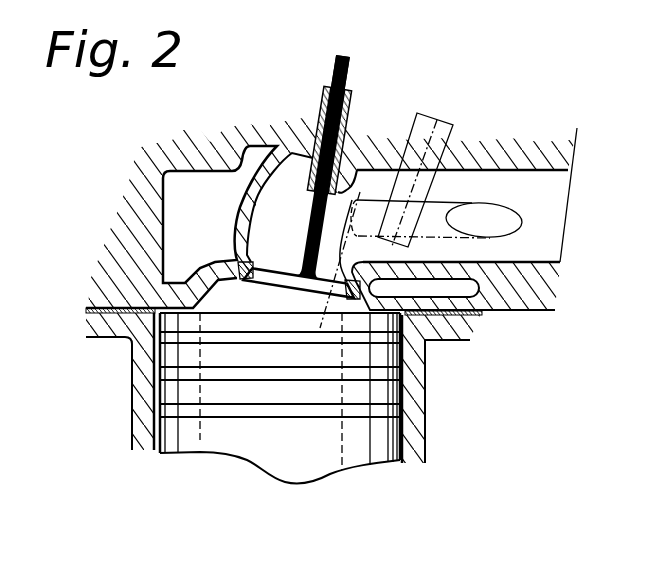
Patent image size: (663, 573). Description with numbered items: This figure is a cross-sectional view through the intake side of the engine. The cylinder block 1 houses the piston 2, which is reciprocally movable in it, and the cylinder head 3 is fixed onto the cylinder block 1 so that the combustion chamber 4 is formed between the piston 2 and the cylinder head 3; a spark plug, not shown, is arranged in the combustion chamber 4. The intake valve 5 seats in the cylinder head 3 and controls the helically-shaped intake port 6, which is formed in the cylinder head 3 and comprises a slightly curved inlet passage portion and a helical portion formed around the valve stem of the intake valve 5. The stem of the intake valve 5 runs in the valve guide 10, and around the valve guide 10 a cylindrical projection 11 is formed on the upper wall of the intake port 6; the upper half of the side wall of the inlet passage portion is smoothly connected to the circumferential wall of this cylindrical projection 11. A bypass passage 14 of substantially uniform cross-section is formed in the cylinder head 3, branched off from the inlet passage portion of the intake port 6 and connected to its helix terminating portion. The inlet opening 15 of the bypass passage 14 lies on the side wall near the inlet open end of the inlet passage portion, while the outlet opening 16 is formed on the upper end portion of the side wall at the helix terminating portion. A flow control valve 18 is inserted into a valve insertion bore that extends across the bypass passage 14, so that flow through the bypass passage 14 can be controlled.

The cylinder block 1 is at (137, 397).
The piston 2 is at (187, 432).
The cylinder head 3 is at (153, 230).
The combustion chamber 4 is at (234, 306).
The intake valve 5 is at (297, 263).
The helically-shaped intake port 6 is at (458, 183).
The valve guide 10 is at (352, 95).
The cylindrical projection 11 is at (331, 187).
The bypass passage 14 is at (433, 233).
The inlet opening 15 is at (503, 227).
The outlet opening 16 is at (328, 289).
The flow control valve 18 is at (443, 116).